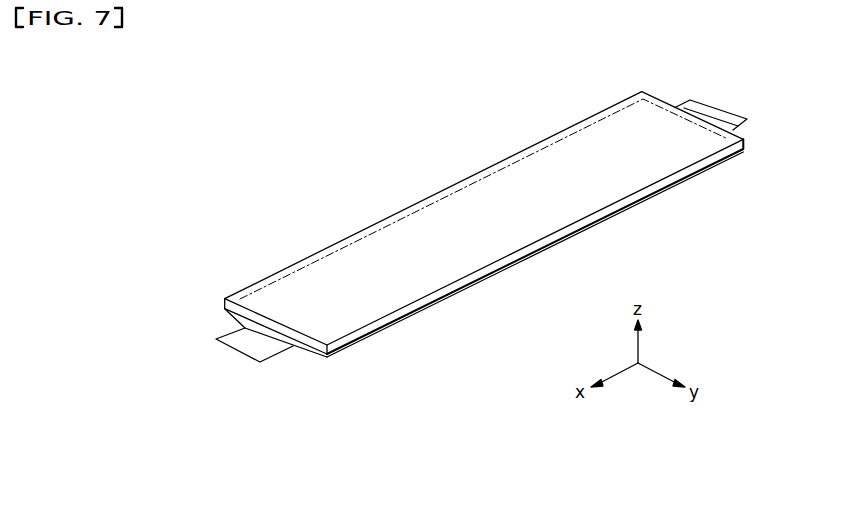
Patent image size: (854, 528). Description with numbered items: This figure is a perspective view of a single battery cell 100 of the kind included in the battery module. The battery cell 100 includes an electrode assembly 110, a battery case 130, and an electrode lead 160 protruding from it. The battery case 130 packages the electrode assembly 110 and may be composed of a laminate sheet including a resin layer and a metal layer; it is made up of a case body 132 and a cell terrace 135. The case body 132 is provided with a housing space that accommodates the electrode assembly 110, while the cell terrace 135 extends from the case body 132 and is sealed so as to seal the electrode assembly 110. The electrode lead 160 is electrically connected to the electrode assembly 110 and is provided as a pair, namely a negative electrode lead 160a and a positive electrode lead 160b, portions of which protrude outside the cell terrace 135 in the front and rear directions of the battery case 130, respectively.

The battery cell 100 is at (423, 187).
The electrode assembly 110 is at (357, 242).
The battery case 130 is at (430, 423).
The case body 132 is at (385, 303).
The cell terrace 135 is at (294, 341).
The electrode lead 160 is at (187, 205).
The negative electrode lead 160a is at (242, 348).
The positive electrode lead 160b is at (708, 109).